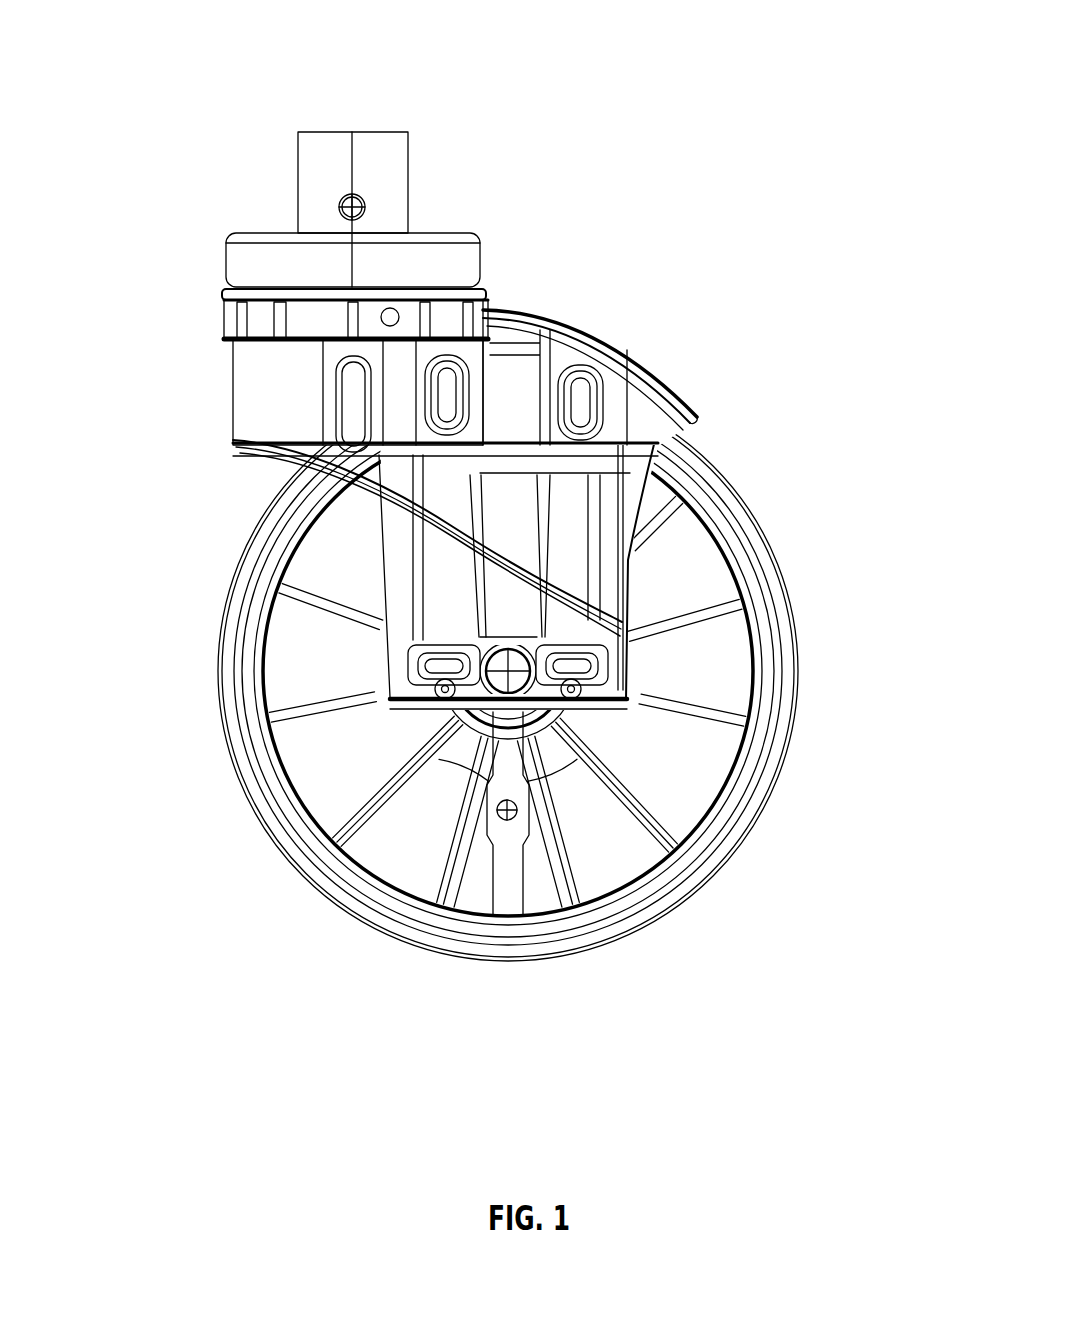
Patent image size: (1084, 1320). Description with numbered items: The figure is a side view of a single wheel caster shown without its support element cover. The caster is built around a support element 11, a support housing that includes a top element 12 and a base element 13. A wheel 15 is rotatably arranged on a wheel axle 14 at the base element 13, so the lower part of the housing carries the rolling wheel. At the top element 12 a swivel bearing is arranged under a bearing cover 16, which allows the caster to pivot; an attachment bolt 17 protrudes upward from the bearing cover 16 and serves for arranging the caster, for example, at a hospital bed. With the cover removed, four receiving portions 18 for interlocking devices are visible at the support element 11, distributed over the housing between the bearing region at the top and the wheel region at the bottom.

The support element 11 is at (501, 557).
The top element 12 is at (520, 367).
The base element 13 is at (577, 553).
The wheel axle 14 is at (566, 752).
The wheel 15 is at (538, 937).
The bearing cover 16 is at (257, 262).
The attachment bolt 17 is at (335, 153).
The receiving portions 18 is at (640, 470).